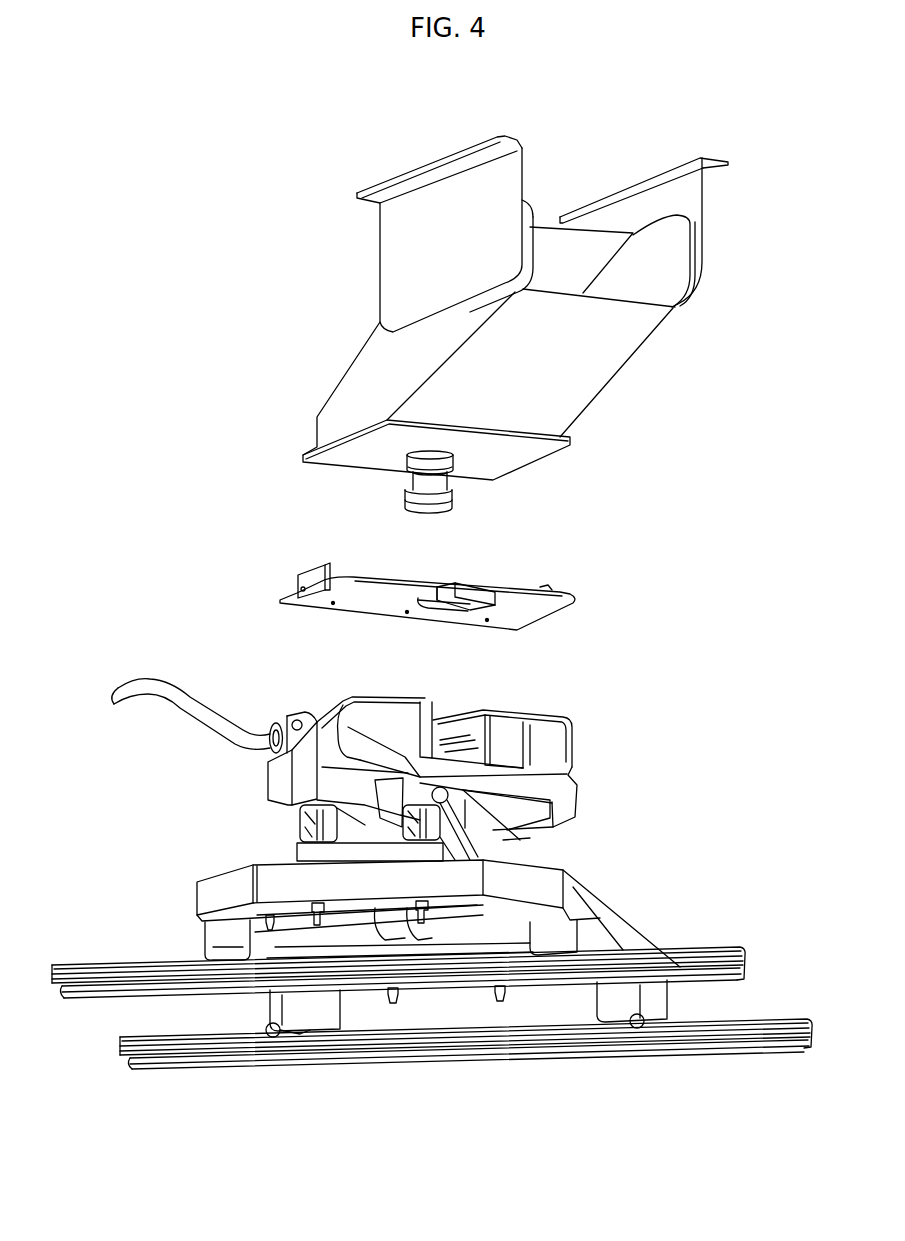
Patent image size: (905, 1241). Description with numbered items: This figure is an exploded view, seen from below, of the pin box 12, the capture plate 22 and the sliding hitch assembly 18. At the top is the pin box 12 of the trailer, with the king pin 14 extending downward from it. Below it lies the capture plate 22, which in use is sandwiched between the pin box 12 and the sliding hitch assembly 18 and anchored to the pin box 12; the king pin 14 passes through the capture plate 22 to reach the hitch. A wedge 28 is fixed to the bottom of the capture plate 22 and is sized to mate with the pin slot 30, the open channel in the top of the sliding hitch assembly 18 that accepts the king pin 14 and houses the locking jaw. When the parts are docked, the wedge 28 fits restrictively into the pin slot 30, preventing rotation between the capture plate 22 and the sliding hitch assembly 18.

The pin box 12 is at (354, 407).
The king pin 14 is at (433, 482).
The sliding hitch assembly 18 is at (660, 818).
The capture plate 22 is at (232, 580).
The wedge 28 is at (510, 570).
The pin slot 30 is at (470, 700).